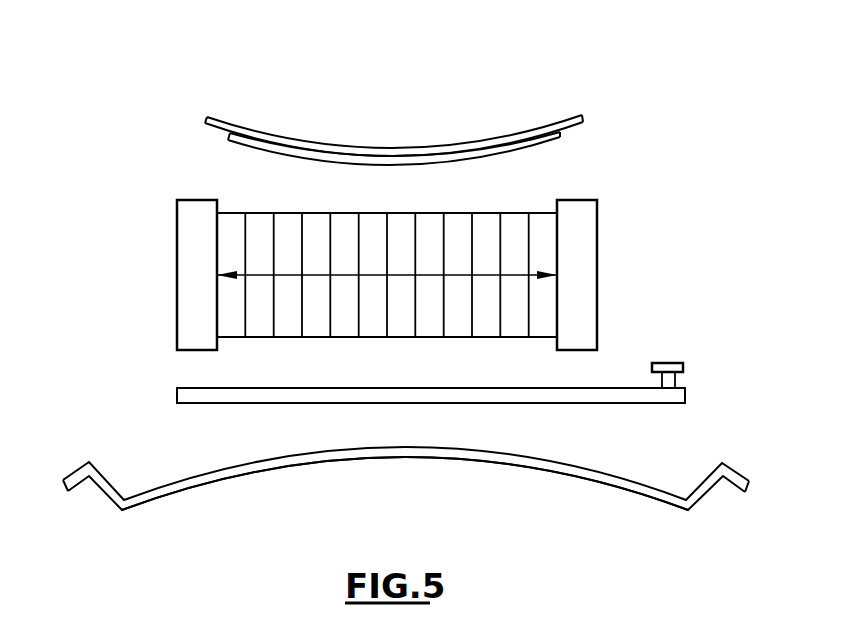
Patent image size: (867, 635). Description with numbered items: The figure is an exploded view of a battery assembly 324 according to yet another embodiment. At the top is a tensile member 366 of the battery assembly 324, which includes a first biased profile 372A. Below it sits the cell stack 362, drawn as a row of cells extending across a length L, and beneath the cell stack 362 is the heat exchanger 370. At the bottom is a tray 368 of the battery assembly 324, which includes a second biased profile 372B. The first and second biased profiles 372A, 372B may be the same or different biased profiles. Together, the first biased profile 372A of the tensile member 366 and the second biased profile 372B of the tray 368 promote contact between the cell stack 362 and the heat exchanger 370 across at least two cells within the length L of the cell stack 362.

The battery assembly 324 is at (431, 114).
The tensile member 366 is at (503, 141).
The first biased profile 372A is at (311, 132).
The cell stack 362 is at (328, 275).
The length L is at (446, 275).
The heat exchanger 370 is at (685, 395).
The tray 368 is at (707, 492).
The second biased profile 372B is at (254, 484).